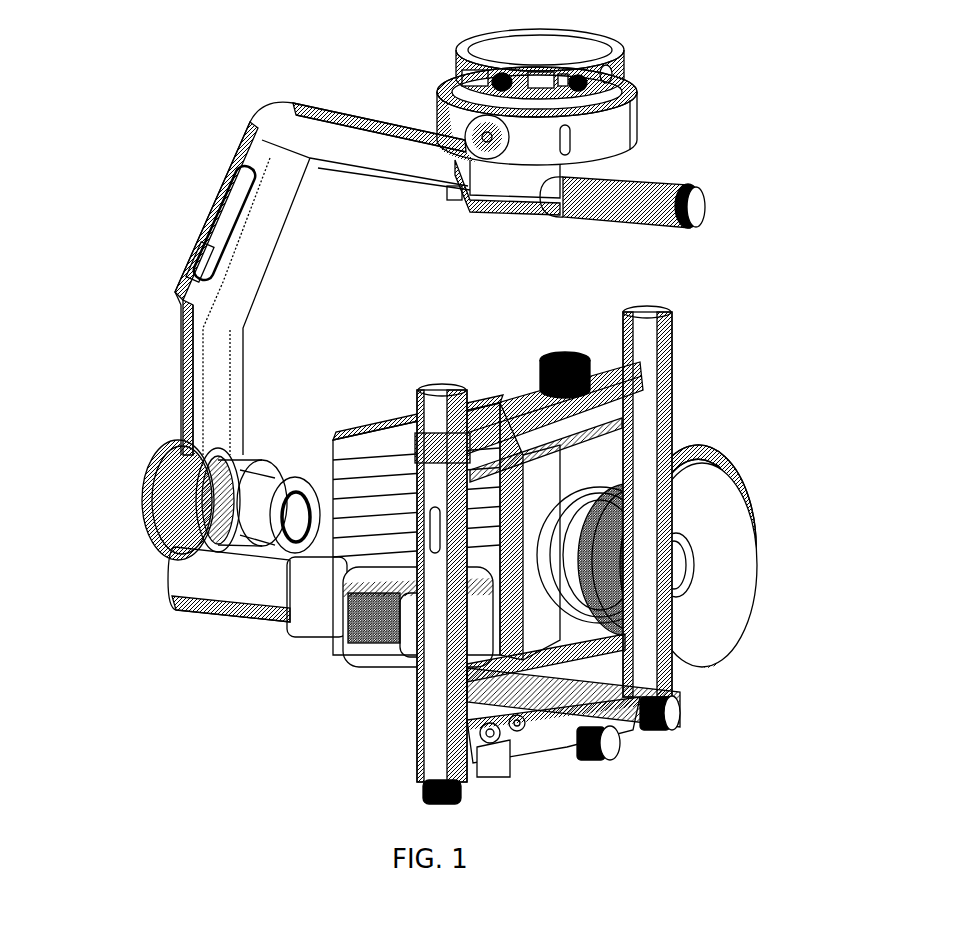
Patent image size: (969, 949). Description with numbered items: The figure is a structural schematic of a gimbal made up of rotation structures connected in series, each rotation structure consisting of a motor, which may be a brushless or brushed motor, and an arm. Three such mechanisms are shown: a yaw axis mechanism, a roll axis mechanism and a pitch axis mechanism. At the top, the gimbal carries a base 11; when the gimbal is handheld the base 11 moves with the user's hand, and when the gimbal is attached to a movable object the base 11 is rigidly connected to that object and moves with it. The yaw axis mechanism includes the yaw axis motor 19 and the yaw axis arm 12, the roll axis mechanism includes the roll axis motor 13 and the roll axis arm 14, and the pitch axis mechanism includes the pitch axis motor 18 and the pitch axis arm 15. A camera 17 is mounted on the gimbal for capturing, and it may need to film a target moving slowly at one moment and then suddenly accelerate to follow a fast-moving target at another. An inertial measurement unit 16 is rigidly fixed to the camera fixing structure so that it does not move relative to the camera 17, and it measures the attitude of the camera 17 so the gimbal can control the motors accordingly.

The base 11 is at (455, 64).
The yaw axis arm 12 is at (178, 278).
The roll axis motor 13 is at (172, 494).
The roll axis arm 14 is at (232, 597).
The pitch axis arm 15 is at (418, 710).
The inertial measurement unit (IMU) 16 is at (680, 708).
The camera 17 is at (735, 584).
The pitch axis motor 18 is at (735, 465).
The yaw axis motor 19 is at (625, 115).